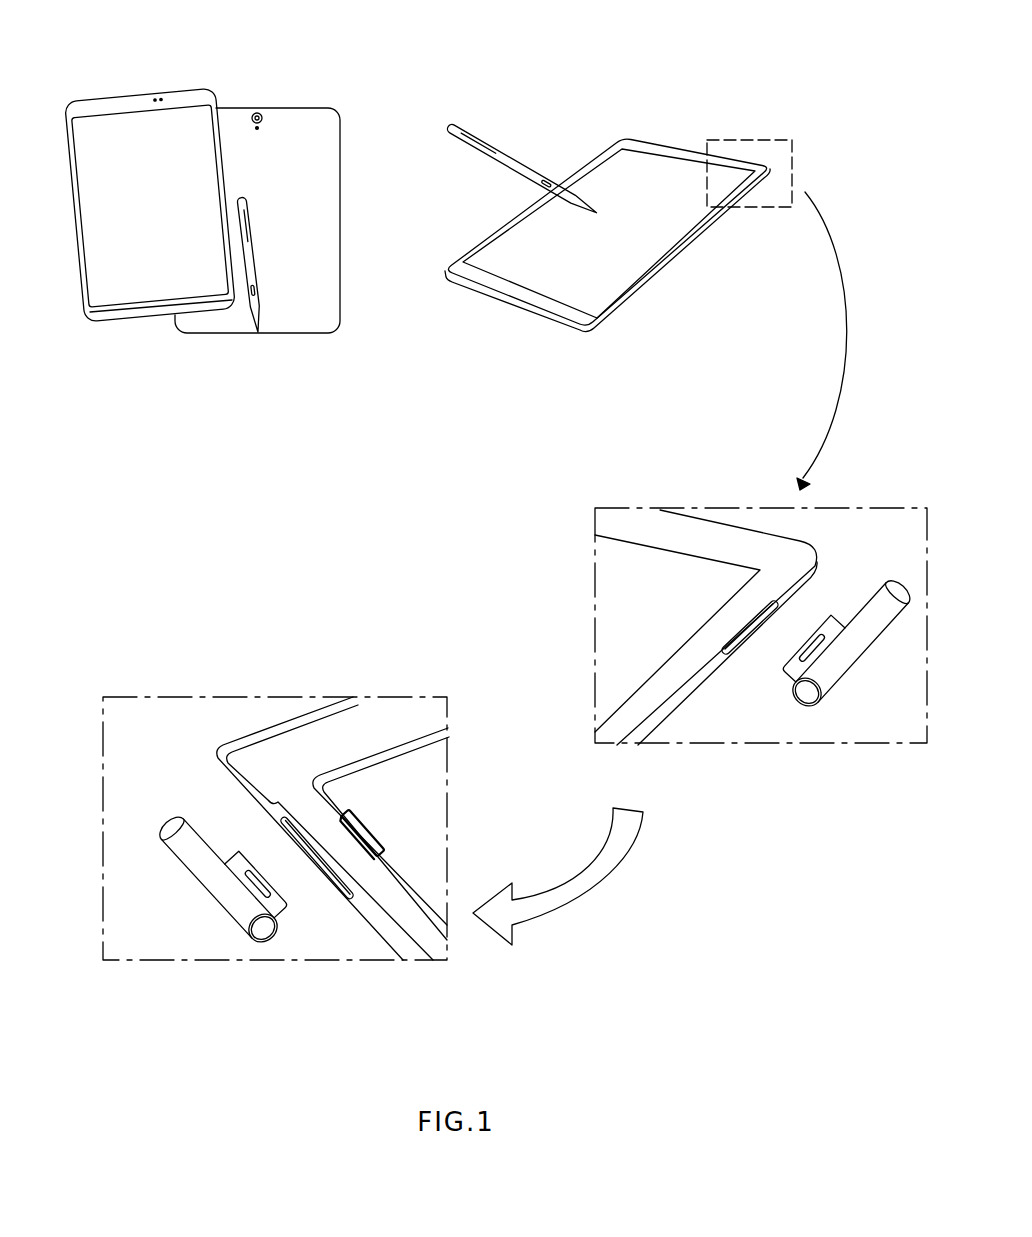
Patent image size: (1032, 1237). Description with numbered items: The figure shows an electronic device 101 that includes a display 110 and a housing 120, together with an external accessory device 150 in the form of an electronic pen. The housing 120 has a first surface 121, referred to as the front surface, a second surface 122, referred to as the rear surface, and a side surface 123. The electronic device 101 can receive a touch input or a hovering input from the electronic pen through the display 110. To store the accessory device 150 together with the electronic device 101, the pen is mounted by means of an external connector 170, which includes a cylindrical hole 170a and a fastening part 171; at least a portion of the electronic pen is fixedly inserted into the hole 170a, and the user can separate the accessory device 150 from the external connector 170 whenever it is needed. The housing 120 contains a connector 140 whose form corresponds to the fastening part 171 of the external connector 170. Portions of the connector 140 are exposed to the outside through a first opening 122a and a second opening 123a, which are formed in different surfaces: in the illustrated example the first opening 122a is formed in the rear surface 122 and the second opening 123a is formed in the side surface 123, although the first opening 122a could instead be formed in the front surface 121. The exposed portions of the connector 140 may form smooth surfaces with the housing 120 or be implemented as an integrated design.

The electronic device 101 is at (236, 58).
The display 110 is at (88, 195).
The housing 120 is at (91, 78).
The first surface 121 is at (105, 315).
The second surface 122 is at (330, 155).
The first opening 122a is at (385, 833).
The side surface 123 is at (618, 313).
The second opening 123a is at (737, 647).
The connector 140 is at (775, 600).
The accessory device 150 is at (263, 308).
The external connector 170 is at (897, 593).
The hole 170a is at (817, 703).
The fastening part 171 is at (830, 627).